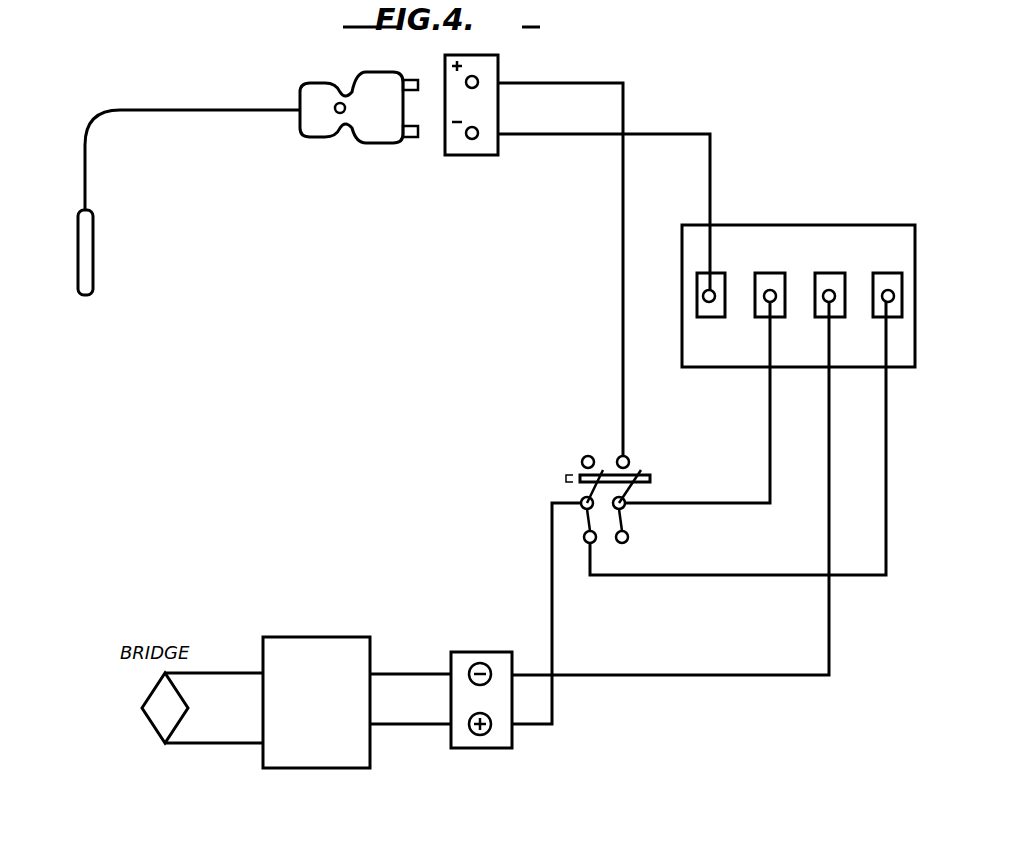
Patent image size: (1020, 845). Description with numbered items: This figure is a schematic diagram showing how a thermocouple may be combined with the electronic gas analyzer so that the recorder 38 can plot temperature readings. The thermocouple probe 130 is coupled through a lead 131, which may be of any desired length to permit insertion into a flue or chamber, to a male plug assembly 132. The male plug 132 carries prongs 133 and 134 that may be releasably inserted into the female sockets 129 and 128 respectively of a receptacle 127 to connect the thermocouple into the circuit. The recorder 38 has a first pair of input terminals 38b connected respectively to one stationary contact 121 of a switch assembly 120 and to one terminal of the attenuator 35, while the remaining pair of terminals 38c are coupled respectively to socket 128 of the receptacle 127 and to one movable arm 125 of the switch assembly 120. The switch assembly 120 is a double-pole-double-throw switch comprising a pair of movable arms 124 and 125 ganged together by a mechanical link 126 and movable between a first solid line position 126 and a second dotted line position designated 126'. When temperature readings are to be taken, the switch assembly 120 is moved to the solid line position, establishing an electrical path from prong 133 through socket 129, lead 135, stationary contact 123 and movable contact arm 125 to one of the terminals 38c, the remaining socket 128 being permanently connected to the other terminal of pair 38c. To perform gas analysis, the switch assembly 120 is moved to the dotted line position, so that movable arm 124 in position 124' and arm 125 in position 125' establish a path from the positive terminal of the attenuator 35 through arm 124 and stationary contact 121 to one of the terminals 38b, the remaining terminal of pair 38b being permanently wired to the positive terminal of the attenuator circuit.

The thermocouple probe 130 is at (94, 275).
The lead 131 is at (179, 112).
The male plug assembly 132 is at (343, 133).
The prong 133 is at (416, 68).
The prong 134 is at (411, 143).
The receptacle 127 is at (493, 129).
The socket 128 is at (480, 136).
The socket 129 is at (480, 78).
The lead 135 is at (620, 328).
The recorder 38 is at (798, 279).
The pair of terminals 38c is at (712, 301).
The pair of input terminals 38b is at (832, 301).
The switch assembly 120 is at (582, 425).
The stationary contact 121 is at (598, 543).
The stationary contact 123 is at (632, 460).
The movable arm 124 is at (582, 480).
The movable arm dotted line position 124' is at (574, 549).
The movable arm 125 is at (656, 493).
The movable arm dotted line position 125' is at (652, 526).
The mechanical link 126 is at (665, 468).
The second dotted line position 126' is at (554, 453).
The attenuator 35 is at (332, 716).